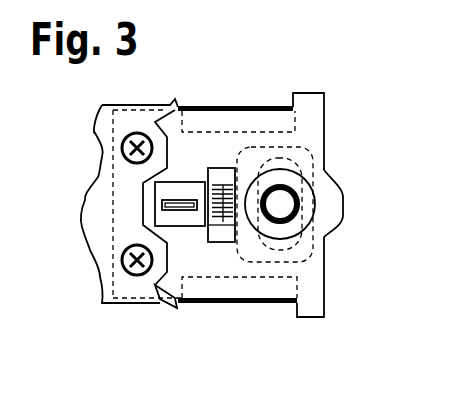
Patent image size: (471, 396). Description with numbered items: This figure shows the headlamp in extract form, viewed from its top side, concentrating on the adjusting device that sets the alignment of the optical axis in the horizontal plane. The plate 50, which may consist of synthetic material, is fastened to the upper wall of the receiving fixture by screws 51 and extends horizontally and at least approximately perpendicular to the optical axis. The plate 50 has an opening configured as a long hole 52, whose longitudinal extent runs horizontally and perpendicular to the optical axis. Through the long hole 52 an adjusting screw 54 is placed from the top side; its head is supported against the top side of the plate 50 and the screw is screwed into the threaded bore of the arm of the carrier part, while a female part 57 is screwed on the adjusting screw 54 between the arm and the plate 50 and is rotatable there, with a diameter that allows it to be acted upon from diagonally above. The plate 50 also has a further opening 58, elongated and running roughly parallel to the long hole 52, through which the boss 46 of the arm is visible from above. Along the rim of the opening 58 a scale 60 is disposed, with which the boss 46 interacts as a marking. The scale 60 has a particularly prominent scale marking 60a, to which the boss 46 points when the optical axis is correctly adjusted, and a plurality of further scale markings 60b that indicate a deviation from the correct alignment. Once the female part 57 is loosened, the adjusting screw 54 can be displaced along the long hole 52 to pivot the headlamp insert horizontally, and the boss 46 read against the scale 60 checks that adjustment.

The boss 46 is at (179, 203).
The plate 50 is at (312, 96).
The screws 51 is at (122, 259).
The long hole 52 is at (300, 188).
The adjusting screw 54 is at (292, 210).
The female part 57 is at (337, 210).
The further opening 58 is at (183, 225).
The scale 60 is at (217, 222).
The scale marking 60a is at (224, 200).
The further scale markings 60b is at (222, 222).